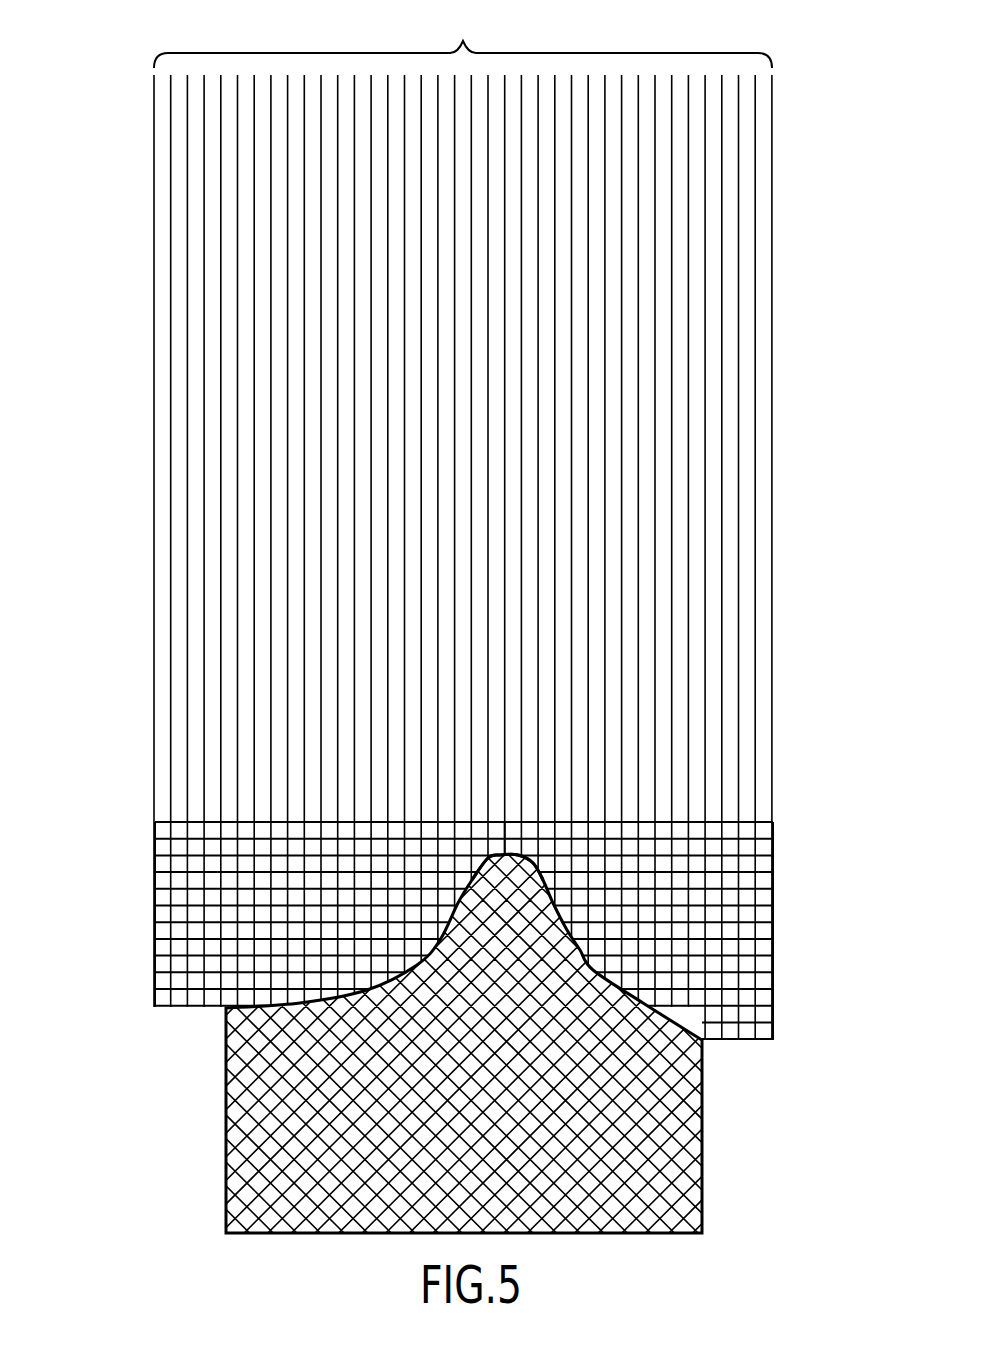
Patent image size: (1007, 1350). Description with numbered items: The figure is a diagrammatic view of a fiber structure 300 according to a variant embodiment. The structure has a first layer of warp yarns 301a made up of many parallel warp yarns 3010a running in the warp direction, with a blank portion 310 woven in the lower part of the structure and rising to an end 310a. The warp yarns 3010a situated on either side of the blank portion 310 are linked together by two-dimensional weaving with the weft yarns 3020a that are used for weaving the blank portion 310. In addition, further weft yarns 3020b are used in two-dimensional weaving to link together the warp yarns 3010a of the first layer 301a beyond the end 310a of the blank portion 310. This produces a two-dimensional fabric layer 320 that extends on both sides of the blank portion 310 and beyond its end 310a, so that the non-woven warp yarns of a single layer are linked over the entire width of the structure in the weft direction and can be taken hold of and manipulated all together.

The fiber structure 300 is at (107, 76).
The first layer of warp yarns 301a is at (463, 38).
The warp yarns 3010a is at (772, 220).
The weft yarns 3020a is at (163, 968).
The additional weft yarns 3020b is at (163, 852).
The blank portion 310 is at (645, 1133).
The end of the blank portion 310a is at (497, 852).
The two-dimensional fabric layer 320 is at (511, 843).